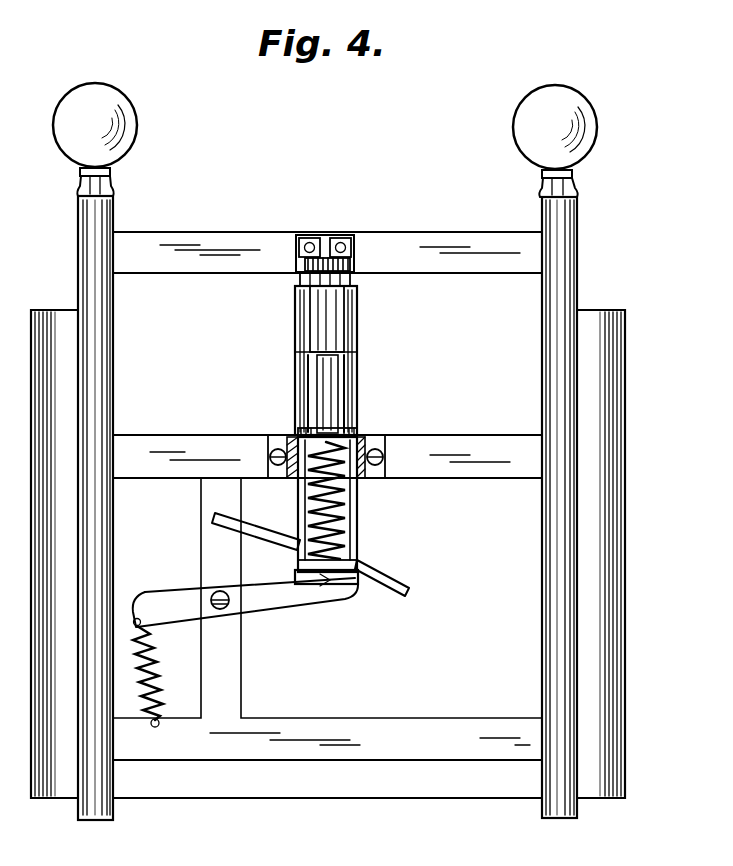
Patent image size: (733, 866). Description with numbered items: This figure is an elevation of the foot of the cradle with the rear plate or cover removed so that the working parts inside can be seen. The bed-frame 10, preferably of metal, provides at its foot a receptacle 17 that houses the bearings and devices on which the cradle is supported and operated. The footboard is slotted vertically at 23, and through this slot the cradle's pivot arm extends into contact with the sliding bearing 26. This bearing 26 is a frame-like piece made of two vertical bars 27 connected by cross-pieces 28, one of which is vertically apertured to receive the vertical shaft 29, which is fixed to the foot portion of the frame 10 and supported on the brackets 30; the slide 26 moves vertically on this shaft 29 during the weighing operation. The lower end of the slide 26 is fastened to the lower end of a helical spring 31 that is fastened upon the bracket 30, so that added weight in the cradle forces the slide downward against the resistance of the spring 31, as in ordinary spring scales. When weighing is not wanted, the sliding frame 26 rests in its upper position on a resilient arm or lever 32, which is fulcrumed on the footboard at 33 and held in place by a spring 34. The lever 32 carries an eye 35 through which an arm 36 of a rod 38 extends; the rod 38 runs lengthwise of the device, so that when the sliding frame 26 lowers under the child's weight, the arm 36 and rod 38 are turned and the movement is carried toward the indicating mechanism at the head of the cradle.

The bed-frame 10 is at (328, 451).
The receptacle 17 is at (391, 598).
The slot 23 is at (350, 283).
The sliding bearing 26 is at (357, 366).
The vertical bar 27 is at (305, 394).
The cross-piece 28 is at (330, 322).
The vertical shaft 29 is at (326, 425).
The bracket 30 is at (354, 262).
The helical spring 31 is at (344, 514).
The resilient arm or lever 32 is at (245, 602).
The fulcrum 33 is at (221, 610).
The spring 34 is at (152, 658).
The eye 35 is at (362, 571).
The arm 36 is at (409, 591).
The rod 38 is at (214, 517).